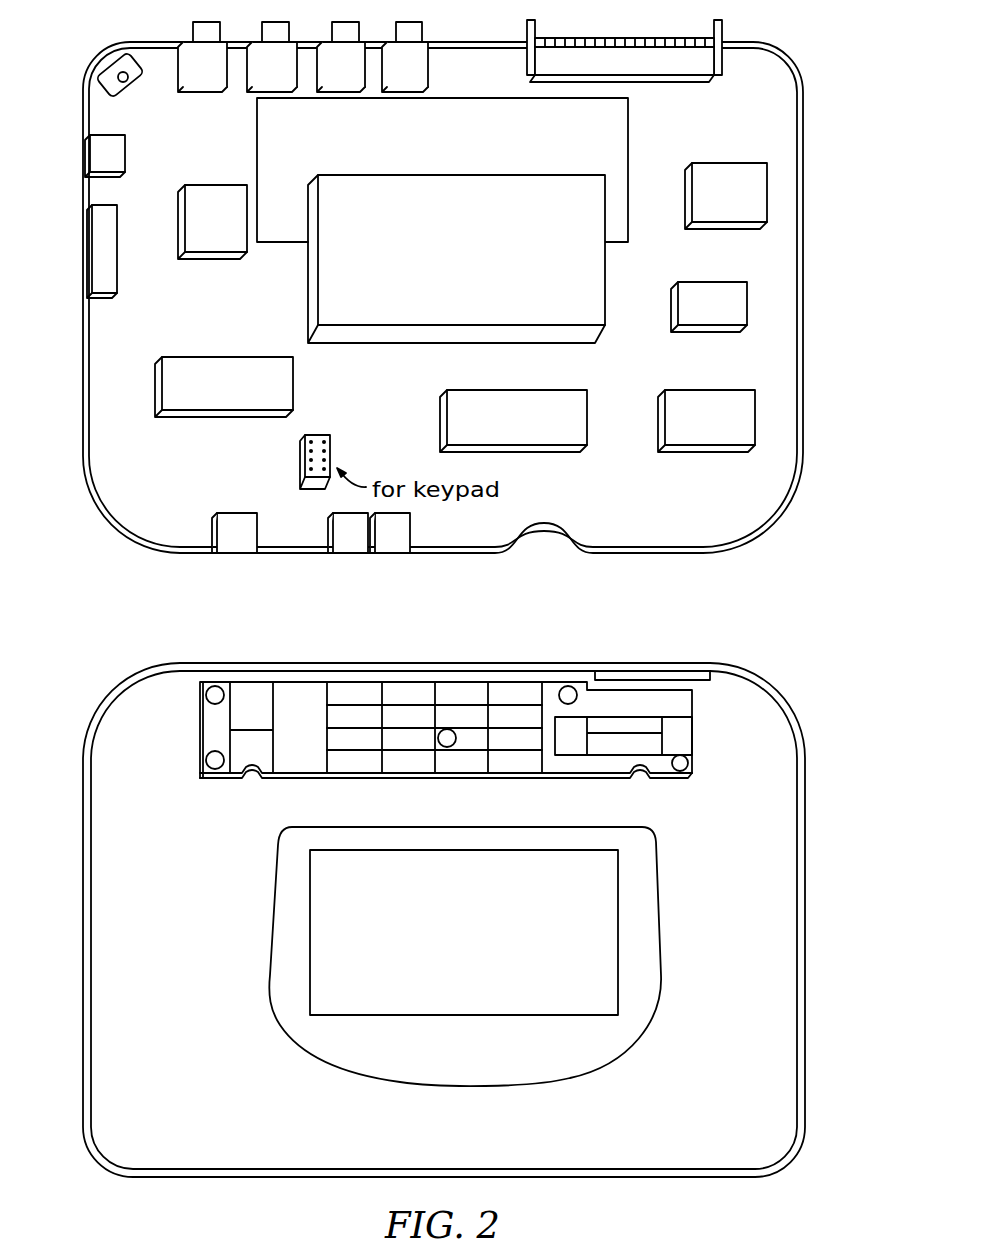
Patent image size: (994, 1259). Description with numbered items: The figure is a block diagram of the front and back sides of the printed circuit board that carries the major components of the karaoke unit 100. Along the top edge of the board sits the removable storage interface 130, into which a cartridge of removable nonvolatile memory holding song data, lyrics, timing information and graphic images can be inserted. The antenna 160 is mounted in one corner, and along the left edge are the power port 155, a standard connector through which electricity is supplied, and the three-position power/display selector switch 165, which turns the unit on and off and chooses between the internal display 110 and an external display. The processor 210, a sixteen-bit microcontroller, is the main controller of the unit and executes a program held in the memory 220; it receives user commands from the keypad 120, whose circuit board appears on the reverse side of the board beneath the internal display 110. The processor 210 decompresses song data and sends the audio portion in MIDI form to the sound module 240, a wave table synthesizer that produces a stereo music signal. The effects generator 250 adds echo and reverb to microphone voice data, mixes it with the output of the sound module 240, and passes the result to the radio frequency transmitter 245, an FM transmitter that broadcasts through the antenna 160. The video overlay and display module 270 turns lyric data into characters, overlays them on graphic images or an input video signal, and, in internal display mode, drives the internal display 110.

The karaoke unit 100 is at (818, 172).
The internal display 110 is at (478, 343).
The keypad 120 is at (678, 780).
The removable storage interface 130 is at (690, 68).
The power port 155 is at (100, 151).
The antenna 160 is at (113, 66).
The power/display selector switch 165 is at (103, 267).
The processor 210 is at (550, 453).
The memory 220 is at (730, 163).
The sound module 240 is at (698, 455).
The radio frequency transmitter 245 is at (218, 260).
The effects generator 250 is at (707, 332).
The video overlay and display module 270 is at (213, 420).